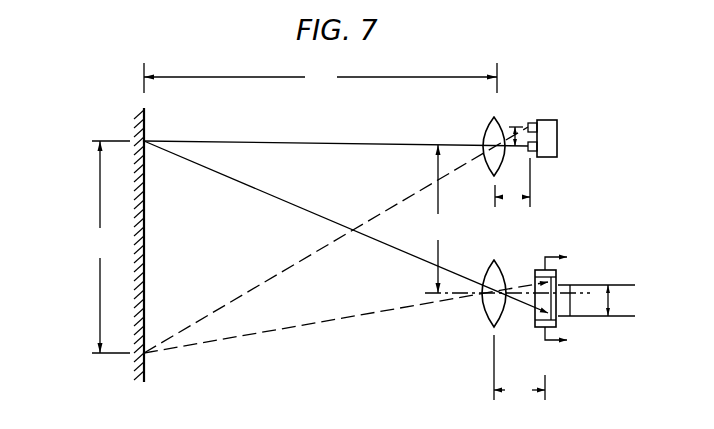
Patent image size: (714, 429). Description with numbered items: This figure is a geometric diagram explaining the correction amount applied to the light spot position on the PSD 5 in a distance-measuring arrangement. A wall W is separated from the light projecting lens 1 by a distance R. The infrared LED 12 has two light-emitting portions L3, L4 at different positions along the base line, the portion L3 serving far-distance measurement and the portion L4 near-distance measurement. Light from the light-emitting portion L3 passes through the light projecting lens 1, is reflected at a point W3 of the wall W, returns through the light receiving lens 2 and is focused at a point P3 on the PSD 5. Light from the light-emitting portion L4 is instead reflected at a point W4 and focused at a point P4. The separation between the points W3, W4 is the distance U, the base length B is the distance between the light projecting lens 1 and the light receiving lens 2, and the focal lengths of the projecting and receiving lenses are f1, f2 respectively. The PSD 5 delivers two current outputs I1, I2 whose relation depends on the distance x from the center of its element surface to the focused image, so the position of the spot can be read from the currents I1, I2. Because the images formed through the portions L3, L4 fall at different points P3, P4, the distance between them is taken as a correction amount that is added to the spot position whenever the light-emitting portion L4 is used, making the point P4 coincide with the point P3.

The light projecting lens 1 is at (490, 132).
The light receiving lens 2 is at (489, 272).
The PSD 5 is at (538, 302).
The infrared LED 12 is at (557, 138).
The wall W is at (145, 241).
The point W3 of the wall W3 is at (158, 131).
The point W4 of the wall W4 is at (158, 366).
The light-emitting portion L3 is at (533, 152).
The light-emitting portion L4 is at (533, 122).
The point P3 on the PSD P3 is at (540, 316).
The point P4 on the PSD P4 is at (540, 281).
The current output I1 is at (556, 249).
The current output I2 is at (557, 349).
The distance to the wall R is at (320, 78).
The distance between points W3 and W4 U is at (110, 247).
The base length B is at (436, 219).
The focal length of the light projecting lens f1 is at (512, 183).
The focal length of the light receiving lens f2 is at (519, 368).
The distance to the point P3 x is at (571, 306).